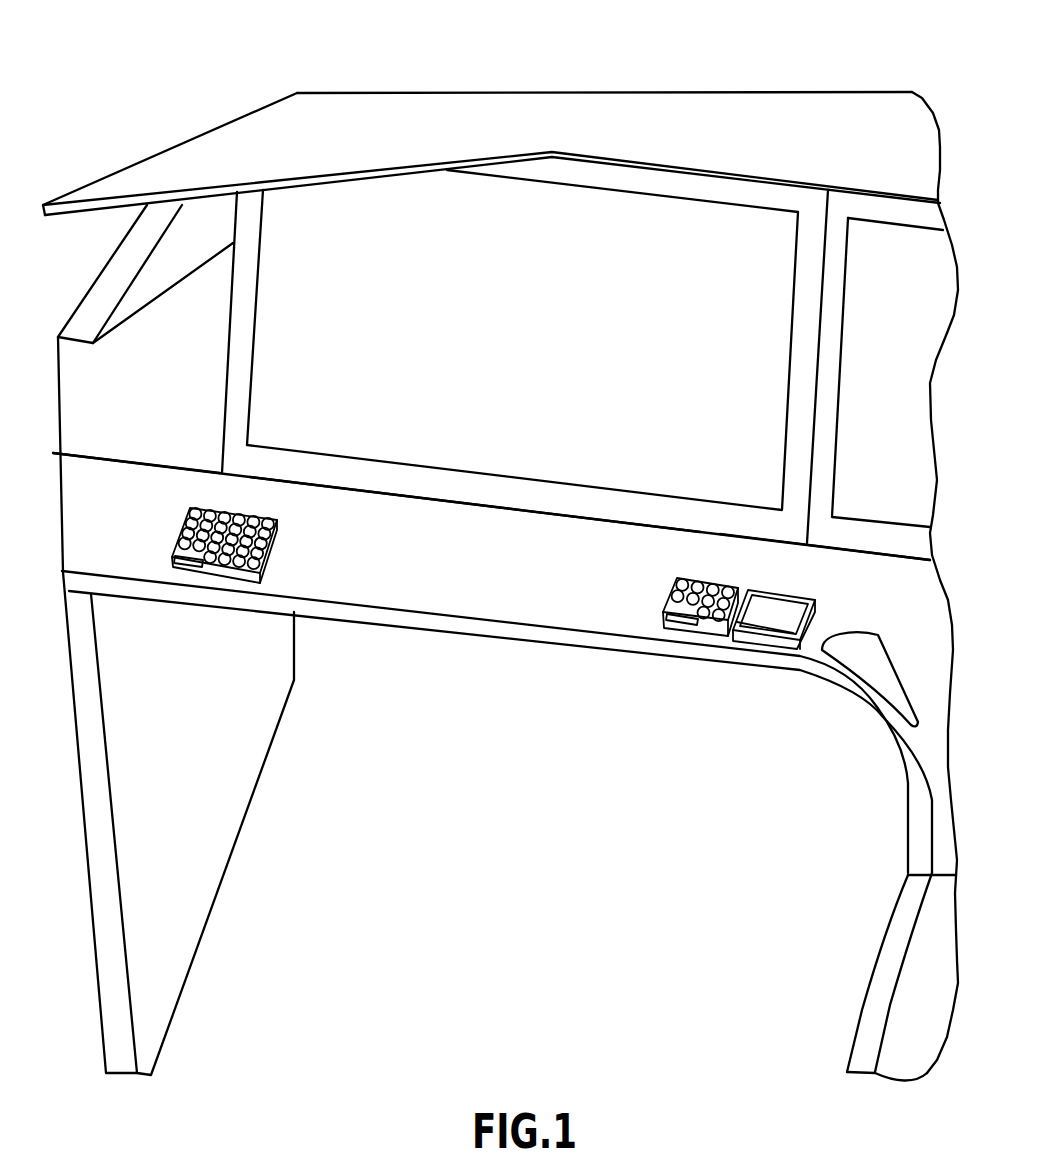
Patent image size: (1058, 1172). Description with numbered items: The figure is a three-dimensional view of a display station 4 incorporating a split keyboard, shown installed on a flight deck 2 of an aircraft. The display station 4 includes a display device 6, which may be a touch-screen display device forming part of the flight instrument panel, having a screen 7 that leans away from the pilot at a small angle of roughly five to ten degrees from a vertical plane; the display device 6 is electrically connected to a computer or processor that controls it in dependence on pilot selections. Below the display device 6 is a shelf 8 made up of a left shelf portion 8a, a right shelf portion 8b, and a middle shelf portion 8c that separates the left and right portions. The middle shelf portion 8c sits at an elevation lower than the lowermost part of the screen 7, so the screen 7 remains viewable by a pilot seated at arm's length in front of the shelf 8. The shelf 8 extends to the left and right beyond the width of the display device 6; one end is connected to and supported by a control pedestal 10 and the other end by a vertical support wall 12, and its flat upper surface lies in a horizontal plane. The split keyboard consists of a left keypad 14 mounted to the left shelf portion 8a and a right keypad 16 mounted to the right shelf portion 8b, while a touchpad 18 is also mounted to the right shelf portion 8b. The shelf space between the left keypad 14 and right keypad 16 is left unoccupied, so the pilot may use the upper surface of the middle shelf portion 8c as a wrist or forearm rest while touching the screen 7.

The flight deck 2 is at (796, 59).
The display station 4 is at (415, 689).
The display device 6 is at (231, 343).
The screen 7 is at (268, 413).
The shelf 8 is at (566, 641).
The left shelf portion 8a is at (143, 546).
The right shelf portion 8b is at (795, 581).
The middle shelf portion 8c is at (477, 579).
The control pedestal 10 is at (860, 1016).
The vertical support wall 12 is at (223, 836).
The left keypad 14 is at (211, 583).
The right keypad 16 is at (695, 630).
The touchpad 18 is at (763, 647).